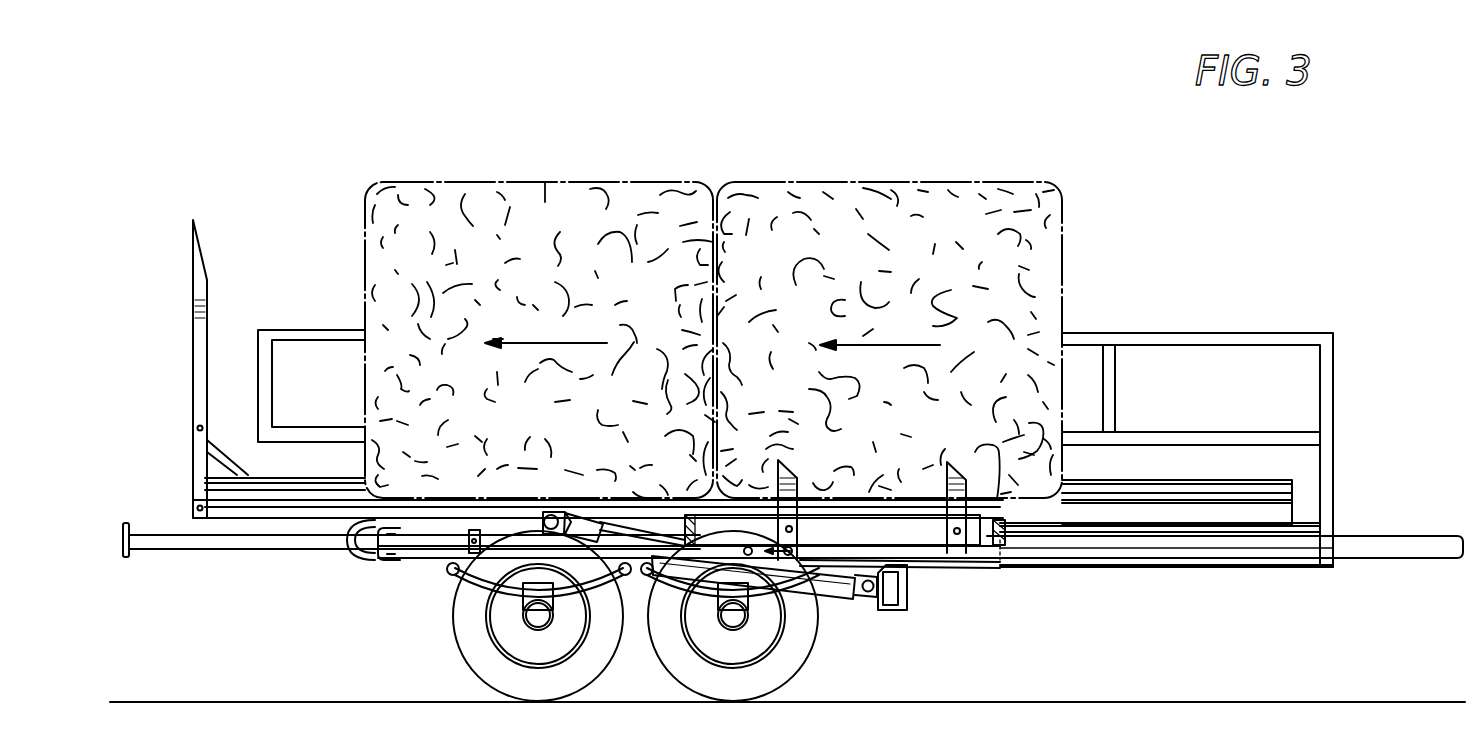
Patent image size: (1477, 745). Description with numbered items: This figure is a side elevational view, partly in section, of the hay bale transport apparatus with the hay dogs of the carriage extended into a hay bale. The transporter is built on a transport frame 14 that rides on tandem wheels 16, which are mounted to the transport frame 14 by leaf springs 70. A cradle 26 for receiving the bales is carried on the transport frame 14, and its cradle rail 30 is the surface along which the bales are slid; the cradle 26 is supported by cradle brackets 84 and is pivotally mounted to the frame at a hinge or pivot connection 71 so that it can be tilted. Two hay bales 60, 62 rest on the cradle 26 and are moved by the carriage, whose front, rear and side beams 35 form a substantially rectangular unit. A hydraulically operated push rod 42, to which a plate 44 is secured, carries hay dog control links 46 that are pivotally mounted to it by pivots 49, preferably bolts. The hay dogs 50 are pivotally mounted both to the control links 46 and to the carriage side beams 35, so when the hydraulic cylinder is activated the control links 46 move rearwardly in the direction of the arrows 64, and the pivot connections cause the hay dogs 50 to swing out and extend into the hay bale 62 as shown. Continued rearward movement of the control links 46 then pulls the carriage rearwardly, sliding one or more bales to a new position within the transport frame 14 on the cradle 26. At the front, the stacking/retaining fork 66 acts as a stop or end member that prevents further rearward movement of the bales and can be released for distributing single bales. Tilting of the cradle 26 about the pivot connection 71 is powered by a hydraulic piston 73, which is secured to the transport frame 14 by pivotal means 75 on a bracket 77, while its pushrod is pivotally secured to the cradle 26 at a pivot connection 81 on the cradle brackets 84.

The transport frame 14 is at (1330, 394).
The tandem wheels 16 is at (680, 663).
The cradle 26 is at (1280, 512).
The cradle rail 30 is at (317, 490).
The carriage side beams 35 is at (905, 555).
The push rod 42 is at (360, 547).
The plate 44 is at (125, 558).
The hay dog control links 46 is at (646, 505).
The pivots 49 is at (468, 542).
The hay dogs 50 is at (781, 462).
The hay bale / pivots 60 is at (545, 200).
The hay bale / pivots 62 is at (900, 205).
The arrows 64 is at (548, 342).
The stacking/retaining fork 66 is at (202, 282).
The leaf springs 70 is at (470, 591).
The hinge or pivot connection 71 is at (372, 556).
The hydraulic piston 73 is at (808, 590).
The pivotal means 75 is at (867, 595).
The bracket 77 is at (895, 612).
The pivot connection 81 is at (552, 501).
The cradle brackets 84 is at (232, 518).